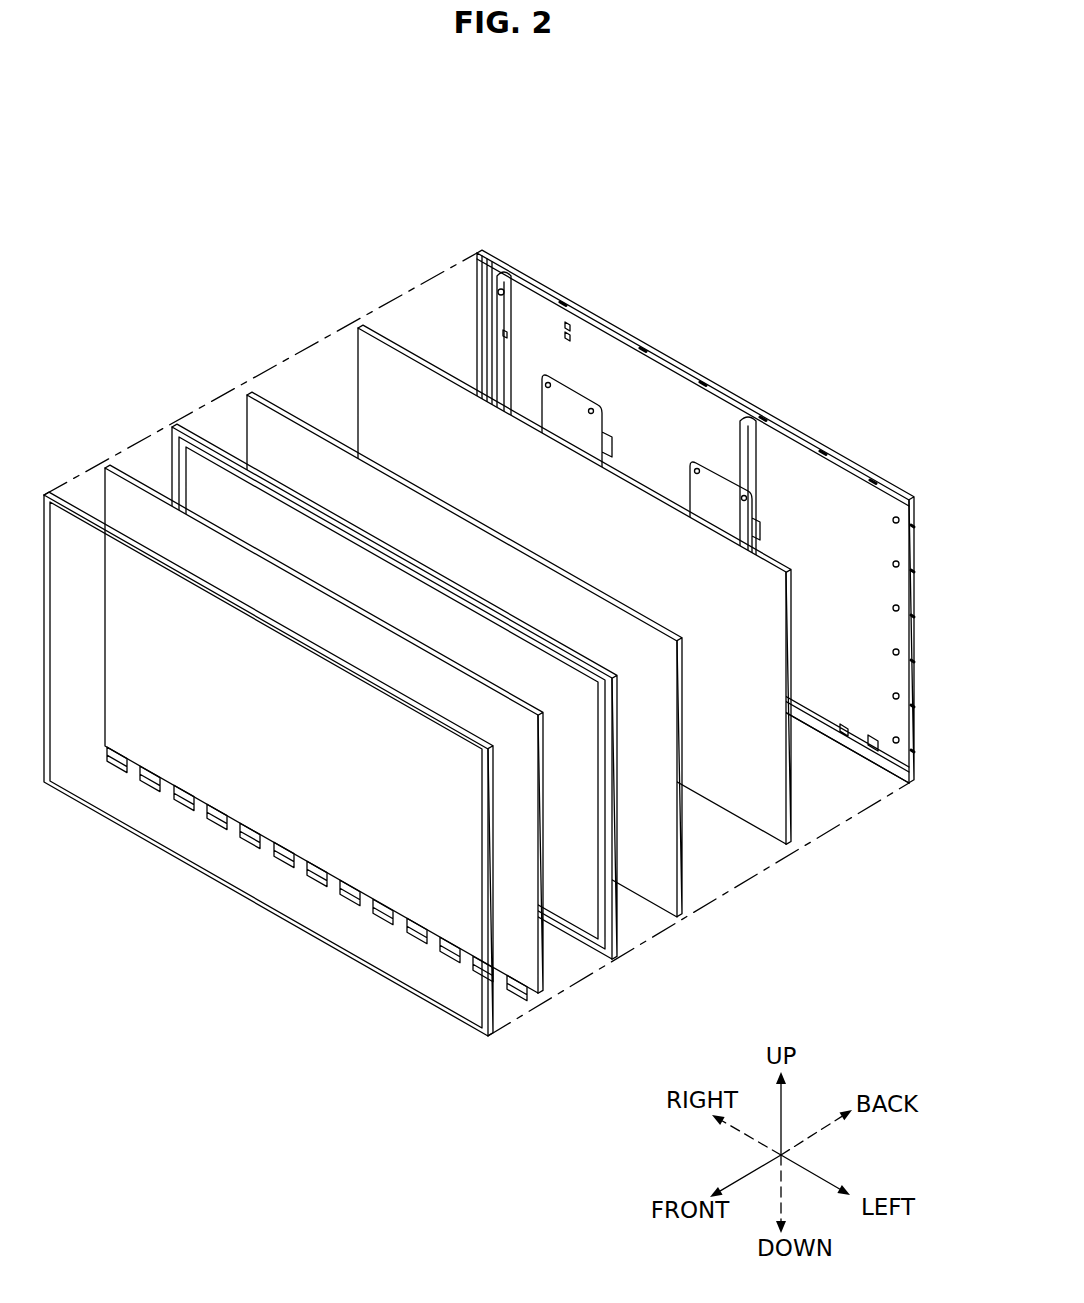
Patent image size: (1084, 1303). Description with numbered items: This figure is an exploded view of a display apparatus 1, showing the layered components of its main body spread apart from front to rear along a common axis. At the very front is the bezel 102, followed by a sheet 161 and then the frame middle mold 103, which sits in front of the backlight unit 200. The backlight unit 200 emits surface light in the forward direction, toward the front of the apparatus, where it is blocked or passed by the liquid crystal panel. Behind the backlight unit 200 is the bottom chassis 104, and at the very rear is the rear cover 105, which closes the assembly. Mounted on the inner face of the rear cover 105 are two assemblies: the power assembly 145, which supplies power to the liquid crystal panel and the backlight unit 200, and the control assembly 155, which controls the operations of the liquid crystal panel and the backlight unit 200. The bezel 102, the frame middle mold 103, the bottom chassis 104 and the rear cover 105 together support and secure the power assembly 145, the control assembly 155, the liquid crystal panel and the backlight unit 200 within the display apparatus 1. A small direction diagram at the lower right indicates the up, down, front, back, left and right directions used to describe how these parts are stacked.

The display device 1 is at (272, 243).
The bezel 102 is at (489, 1036).
The optical sheet 161 is at (540, 993).
The frame middle mold 103 is at (612, 959).
The backlight unit 200 is at (677, 917).
The bottom chassis 104 is at (787, 845).
The rear cover 105 is at (909, 783).
The power assembly 145 is at (573, 400).
The control assembly 155 is at (702, 475).